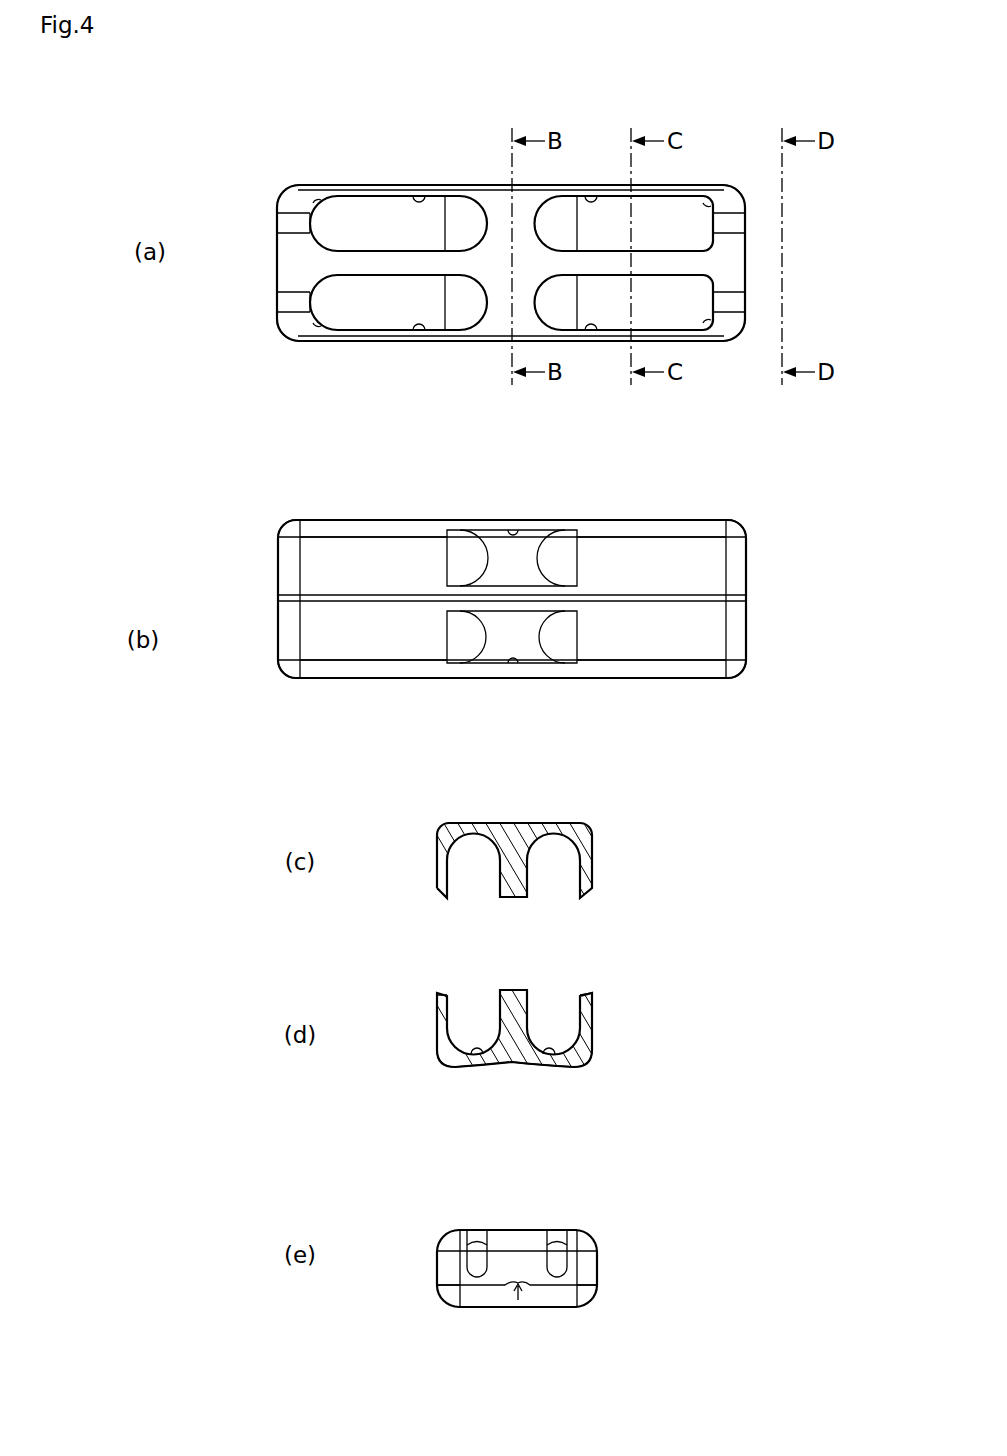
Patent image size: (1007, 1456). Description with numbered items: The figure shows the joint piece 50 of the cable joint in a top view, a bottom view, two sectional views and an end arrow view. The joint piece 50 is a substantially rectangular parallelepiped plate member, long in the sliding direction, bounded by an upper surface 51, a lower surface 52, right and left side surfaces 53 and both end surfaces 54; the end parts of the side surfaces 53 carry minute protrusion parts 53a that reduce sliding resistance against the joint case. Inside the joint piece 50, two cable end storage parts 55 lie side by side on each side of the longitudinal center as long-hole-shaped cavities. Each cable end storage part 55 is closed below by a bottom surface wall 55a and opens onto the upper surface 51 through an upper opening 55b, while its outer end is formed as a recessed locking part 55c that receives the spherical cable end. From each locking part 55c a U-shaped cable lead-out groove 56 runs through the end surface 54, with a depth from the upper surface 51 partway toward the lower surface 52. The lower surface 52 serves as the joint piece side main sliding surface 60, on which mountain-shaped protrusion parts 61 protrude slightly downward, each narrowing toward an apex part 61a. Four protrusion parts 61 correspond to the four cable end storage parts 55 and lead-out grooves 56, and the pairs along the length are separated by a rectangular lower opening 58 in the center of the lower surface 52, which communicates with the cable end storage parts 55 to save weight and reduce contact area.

The joint piece 50 is at (758, 206).
The upper surface 51 is at (503, 212).
The lower surface 52 is at (715, 562).
The side surfaces 53 is at (458, 186).
The minute protrusion parts 53a is at (302, 183).
The end surfaces 54 is at (277, 263).
The cable end storage part 55 is at (392, 215).
The bottom surface wall 55a is at (345, 215).
The upper opening 55b is at (418, 195).
The locking part 55c is at (312, 203).
The cable lead-out groove 56 is at (285, 222).
The lower opening 58 is at (483, 236).
The joint piece side main sliding surface 60 is at (478, 1220).
The protrusion part 61 is at (370, 557).
The apex part 61a is at (477, 1308).